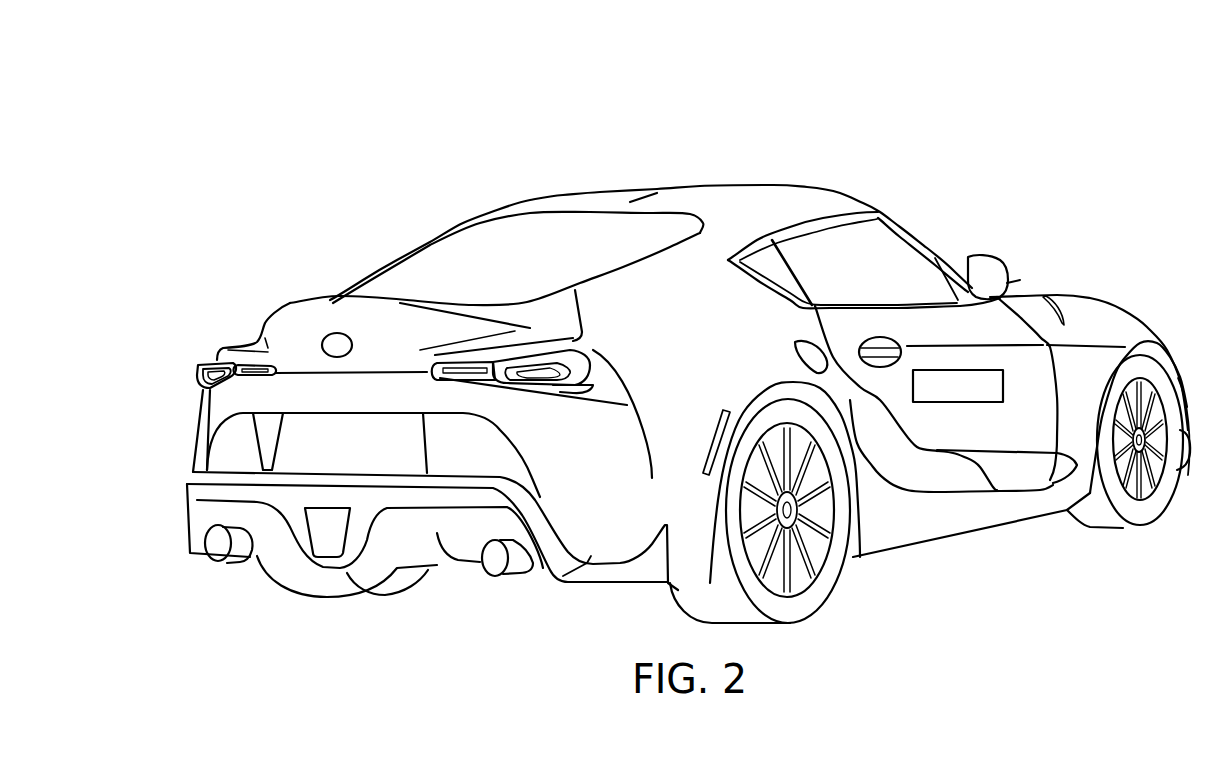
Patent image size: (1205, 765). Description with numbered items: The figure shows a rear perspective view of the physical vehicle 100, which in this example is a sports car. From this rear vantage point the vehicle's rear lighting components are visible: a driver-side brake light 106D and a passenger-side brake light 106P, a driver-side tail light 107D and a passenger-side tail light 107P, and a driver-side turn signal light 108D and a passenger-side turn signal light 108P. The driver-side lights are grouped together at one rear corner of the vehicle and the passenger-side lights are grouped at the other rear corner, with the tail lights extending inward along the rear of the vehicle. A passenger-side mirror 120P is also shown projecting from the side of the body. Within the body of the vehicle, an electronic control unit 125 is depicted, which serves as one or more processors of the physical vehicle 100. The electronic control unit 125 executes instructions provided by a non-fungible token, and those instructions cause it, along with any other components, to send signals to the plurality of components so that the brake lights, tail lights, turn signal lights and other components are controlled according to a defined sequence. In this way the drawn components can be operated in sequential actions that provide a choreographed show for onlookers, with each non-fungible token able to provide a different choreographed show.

The physical vehicle 100 is at (270, 146).
The driver-side brake light 106D is at (215, 368).
The driver-side turn signal light 108D is at (208, 382).
The driver-side tail light 107D is at (258, 376).
The passenger-side tail light 107P is at (463, 378).
The passenger-side turn signal light 108P is at (577, 372).
The passenger-side brake light 106P is at (573, 390).
The passenger-side mirror 120P is at (1012, 279).
The electronic control unit 125 is at (953, 405).